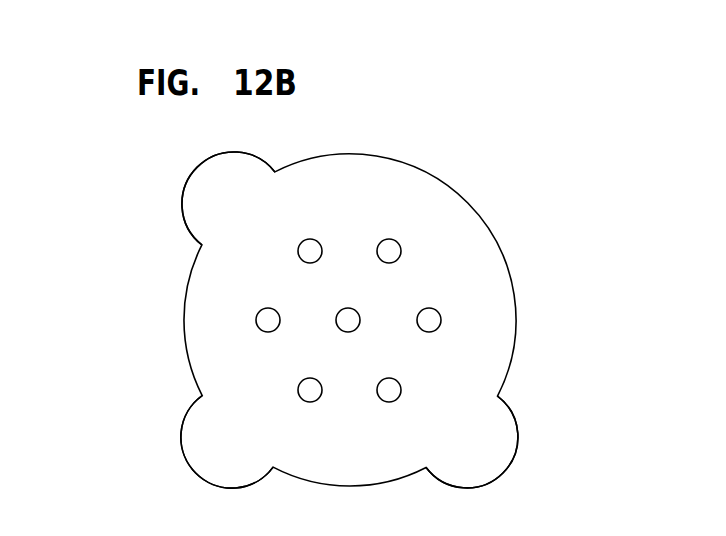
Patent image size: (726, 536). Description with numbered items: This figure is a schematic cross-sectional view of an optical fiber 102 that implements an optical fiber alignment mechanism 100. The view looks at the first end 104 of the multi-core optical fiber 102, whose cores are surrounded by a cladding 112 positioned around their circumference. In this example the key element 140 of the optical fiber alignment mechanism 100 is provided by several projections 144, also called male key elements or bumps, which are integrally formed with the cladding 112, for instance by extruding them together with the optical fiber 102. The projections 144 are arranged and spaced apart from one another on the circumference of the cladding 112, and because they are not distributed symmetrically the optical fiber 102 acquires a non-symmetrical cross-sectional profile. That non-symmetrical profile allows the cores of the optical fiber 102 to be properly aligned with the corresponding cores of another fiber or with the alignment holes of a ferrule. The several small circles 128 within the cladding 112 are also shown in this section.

The optical fiber alignment mechanism 100 is at (365, 107).
The optical fiber 102 is at (434, 318).
The first end 104 is at (434, 318).
The cladding 112 is at (513, 313).
The fastener holes 128 is at (429, 320).
The key element 140 is at (172, 160).
The projections 144 is at (223, 192).